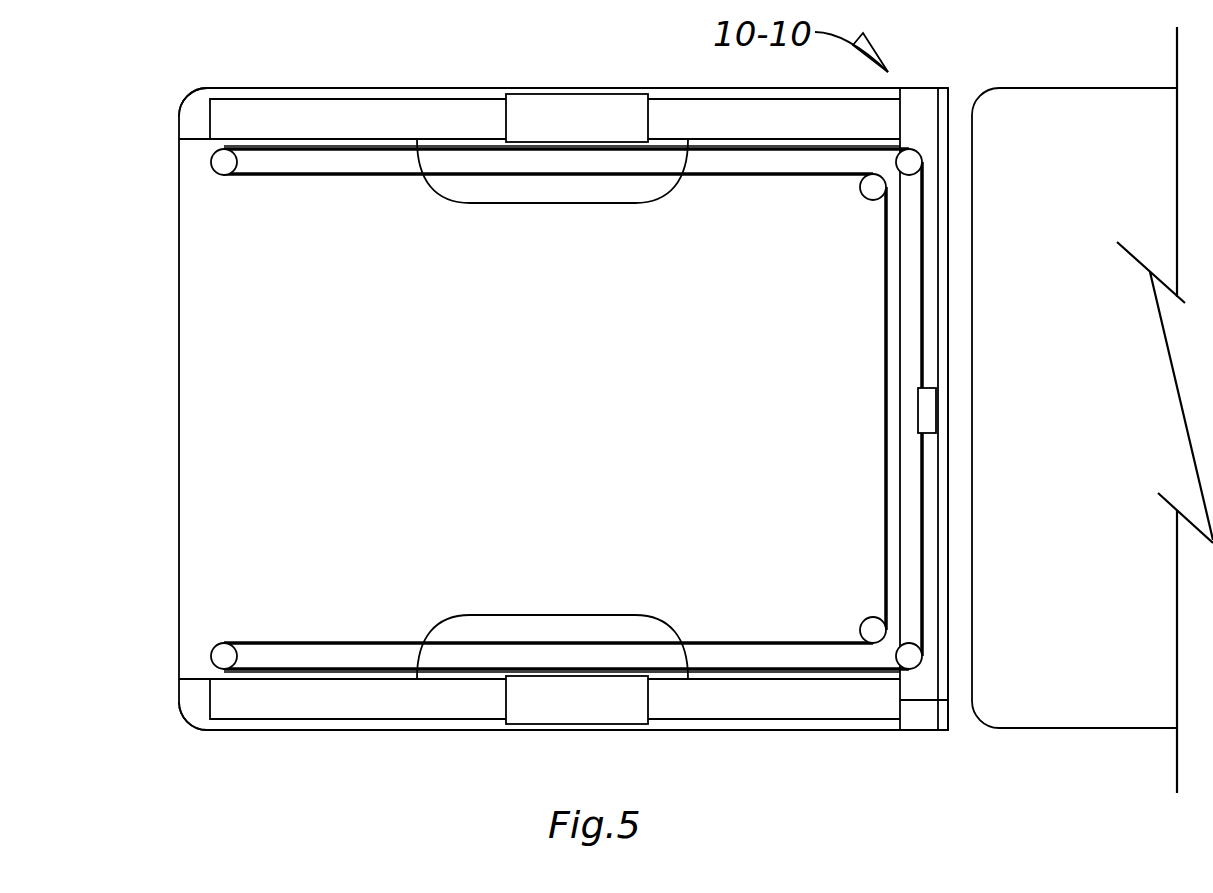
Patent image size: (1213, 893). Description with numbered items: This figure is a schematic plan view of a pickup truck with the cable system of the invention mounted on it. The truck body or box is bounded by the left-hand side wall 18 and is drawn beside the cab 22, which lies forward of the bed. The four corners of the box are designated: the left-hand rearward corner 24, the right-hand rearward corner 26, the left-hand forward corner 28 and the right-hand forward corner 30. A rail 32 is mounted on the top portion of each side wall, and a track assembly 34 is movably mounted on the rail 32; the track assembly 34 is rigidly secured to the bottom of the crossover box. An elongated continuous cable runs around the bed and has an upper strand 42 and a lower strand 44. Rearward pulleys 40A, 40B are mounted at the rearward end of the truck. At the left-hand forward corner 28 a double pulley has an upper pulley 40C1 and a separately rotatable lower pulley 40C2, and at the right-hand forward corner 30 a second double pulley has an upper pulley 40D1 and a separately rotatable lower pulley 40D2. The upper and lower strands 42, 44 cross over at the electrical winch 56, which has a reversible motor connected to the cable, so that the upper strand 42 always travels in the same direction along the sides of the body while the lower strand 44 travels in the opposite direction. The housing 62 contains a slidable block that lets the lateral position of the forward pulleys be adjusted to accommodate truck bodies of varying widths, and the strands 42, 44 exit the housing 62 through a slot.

The left-hand side wall 18 is at (418, 88).
The cab 22 is at (1060, 394).
The left-hand rearward corner 24 is at (187, 97).
The right-hand rearward corner 26 is at (188, 722).
The left-hand forward corner 28 is at (948, 86).
The right-hand forward corner 30 is at (948, 731).
The rail 32 is at (343, 99).
The track assembly 34 is at (560, 94).
The rearward pulley 40A is at (211, 162).
The rearward pulley 40B is at (211, 656).
The upper pulley 40C1 is at (918, 152).
The lower pulley 40C2 is at (864, 196).
The upper pulley 40D1 is at (918, 665).
The lower pulley 40D2 is at (864, 621).
The upper strand 42 is at (343, 140).
The lower strand 44 is at (762, 175).
The electrical winch 56 is at (918, 410).
The housing 62 is at (932, 117).